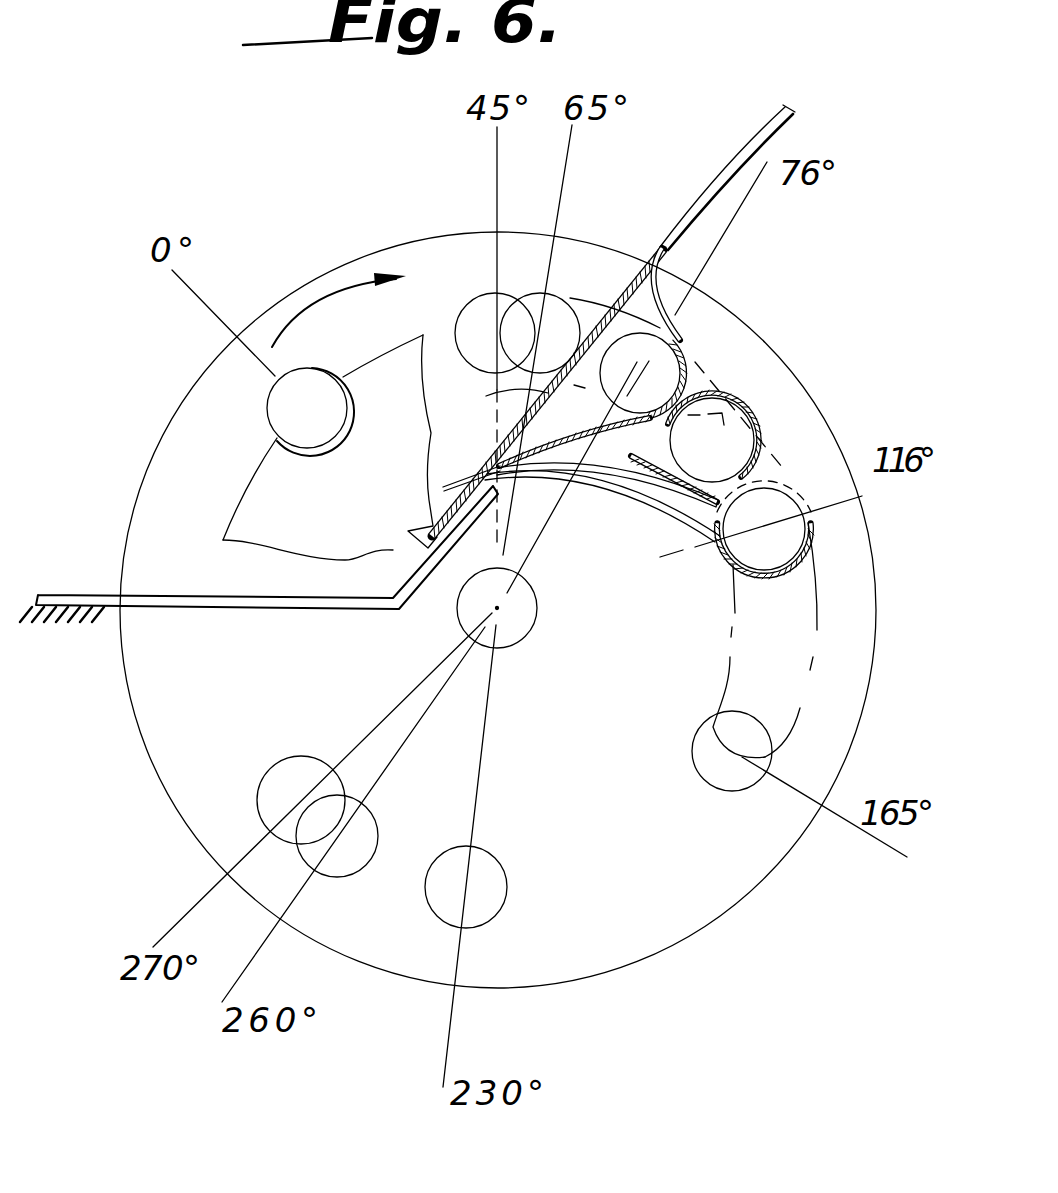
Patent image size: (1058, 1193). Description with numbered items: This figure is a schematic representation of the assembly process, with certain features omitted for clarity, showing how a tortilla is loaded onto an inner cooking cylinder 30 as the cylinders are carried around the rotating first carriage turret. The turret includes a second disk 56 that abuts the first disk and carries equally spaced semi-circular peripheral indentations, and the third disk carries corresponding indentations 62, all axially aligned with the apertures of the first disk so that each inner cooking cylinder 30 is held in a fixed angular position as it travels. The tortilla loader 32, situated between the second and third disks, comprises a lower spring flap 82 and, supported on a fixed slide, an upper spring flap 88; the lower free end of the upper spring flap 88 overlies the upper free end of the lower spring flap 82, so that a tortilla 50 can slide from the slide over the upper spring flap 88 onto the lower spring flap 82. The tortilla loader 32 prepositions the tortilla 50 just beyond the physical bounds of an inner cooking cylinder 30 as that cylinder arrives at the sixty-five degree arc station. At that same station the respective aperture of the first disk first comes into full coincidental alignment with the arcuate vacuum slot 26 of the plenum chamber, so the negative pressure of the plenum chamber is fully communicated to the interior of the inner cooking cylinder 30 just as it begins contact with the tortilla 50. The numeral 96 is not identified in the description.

The arcuate opening 26 is at (815, 587).
The inner cooking cylinder 30 is at (323, 360).
The tortilla loader 32 is at (692, 188).
The tortilla 50 is at (488, 396).
The second disk 56 is at (244, 488).
The semi-circular peripheral indentation 62 is at (343, 377).
The lower spring flap 82 is at (624, 495).
The upper spring flap 88 is at (657, 287).
The ball in pocket 96 is at (704, 461).